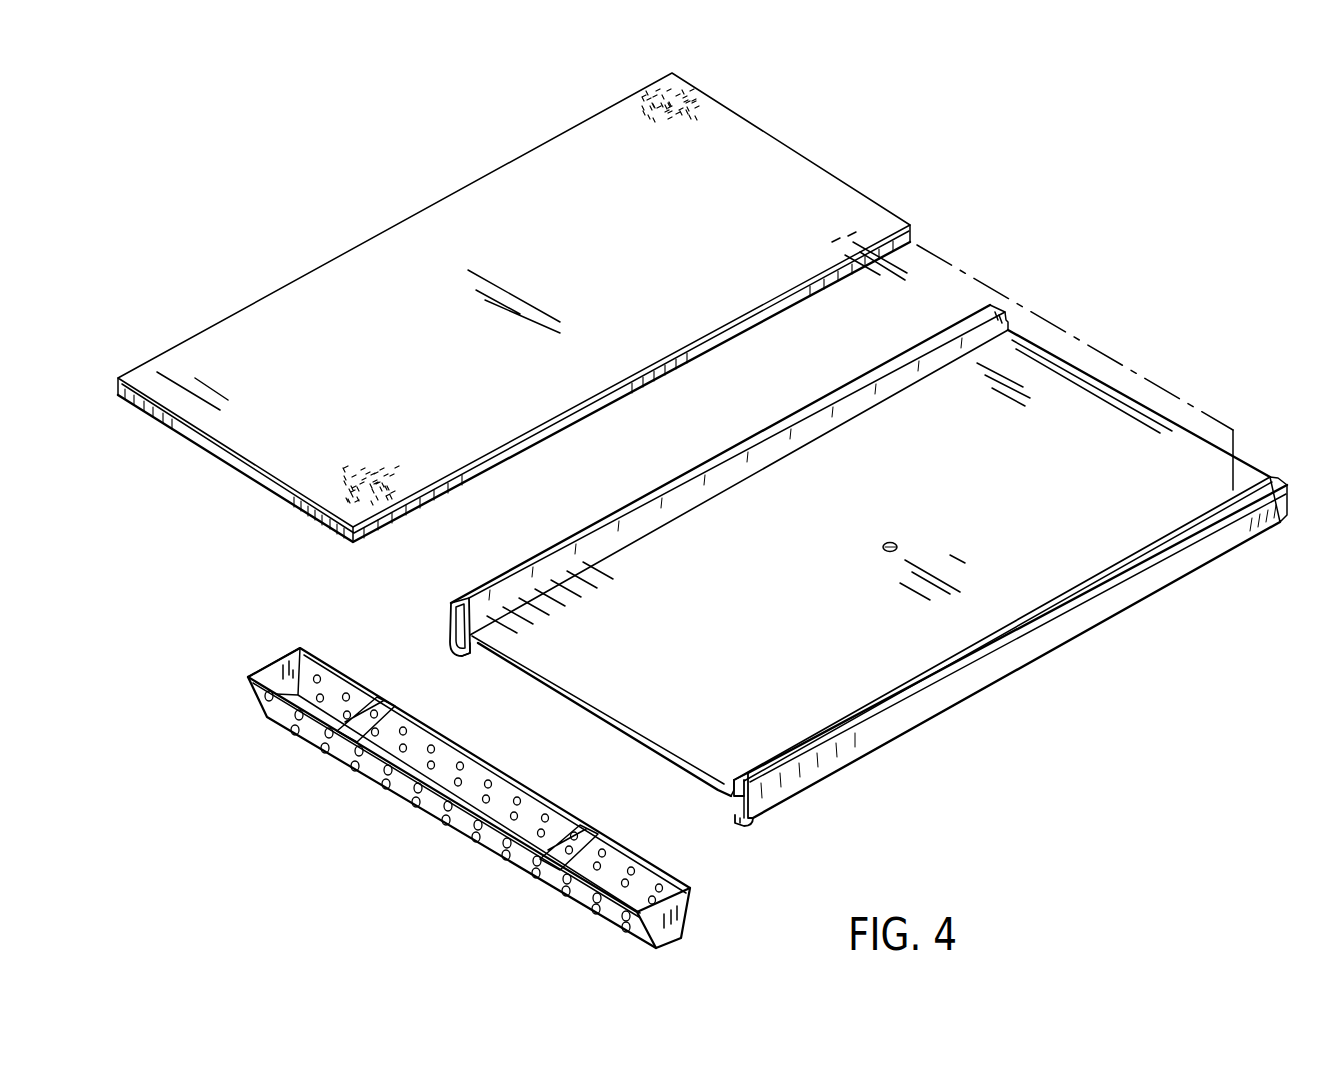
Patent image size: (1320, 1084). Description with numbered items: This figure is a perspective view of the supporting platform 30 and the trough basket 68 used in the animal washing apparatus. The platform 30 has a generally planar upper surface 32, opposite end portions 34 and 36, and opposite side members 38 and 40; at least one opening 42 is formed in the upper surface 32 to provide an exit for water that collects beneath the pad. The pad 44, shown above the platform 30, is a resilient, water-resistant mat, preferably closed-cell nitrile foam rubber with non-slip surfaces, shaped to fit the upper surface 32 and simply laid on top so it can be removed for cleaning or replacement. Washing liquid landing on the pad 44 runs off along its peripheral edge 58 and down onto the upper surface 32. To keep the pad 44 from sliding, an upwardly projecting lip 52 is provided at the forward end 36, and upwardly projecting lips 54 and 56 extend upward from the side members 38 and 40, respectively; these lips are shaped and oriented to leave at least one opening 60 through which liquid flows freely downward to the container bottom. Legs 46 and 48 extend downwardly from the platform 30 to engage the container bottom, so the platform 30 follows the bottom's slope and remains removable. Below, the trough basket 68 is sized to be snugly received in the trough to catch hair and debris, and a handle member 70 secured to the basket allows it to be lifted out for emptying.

The supporting platform 30 is at (814, 575).
The upper surface 32 is at (988, 490).
The end portion 34 is at (1099, 390).
The forward end portion 36 is at (601, 716).
The side member 38 is at (718, 516).
The side member 40 is at (930, 636).
The opening 42 is at (900, 546).
The pad 44 is at (745, 215).
The leg 46 is at (740, 824).
The leg 48 is at (452, 655).
The upwardly projecting lip 52 is at (623, 733).
The upwardly projecting lip 54 is at (615, 542).
The upwardly projecting lip 56 is at (998, 691).
The peripheral edge 58 is at (207, 443).
The opening 60 is at (447, 636).
The trough basket 68 is at (434, 777).
The handle member 70 is at (353, 730).